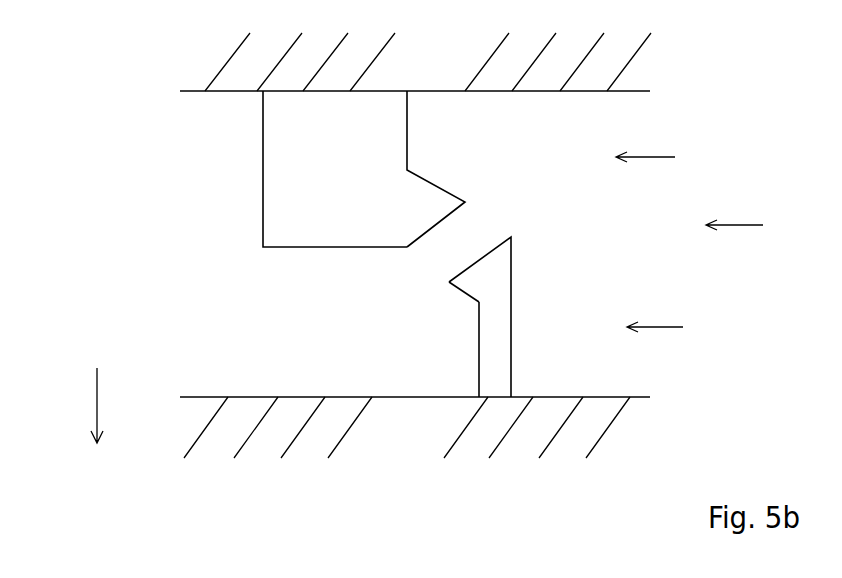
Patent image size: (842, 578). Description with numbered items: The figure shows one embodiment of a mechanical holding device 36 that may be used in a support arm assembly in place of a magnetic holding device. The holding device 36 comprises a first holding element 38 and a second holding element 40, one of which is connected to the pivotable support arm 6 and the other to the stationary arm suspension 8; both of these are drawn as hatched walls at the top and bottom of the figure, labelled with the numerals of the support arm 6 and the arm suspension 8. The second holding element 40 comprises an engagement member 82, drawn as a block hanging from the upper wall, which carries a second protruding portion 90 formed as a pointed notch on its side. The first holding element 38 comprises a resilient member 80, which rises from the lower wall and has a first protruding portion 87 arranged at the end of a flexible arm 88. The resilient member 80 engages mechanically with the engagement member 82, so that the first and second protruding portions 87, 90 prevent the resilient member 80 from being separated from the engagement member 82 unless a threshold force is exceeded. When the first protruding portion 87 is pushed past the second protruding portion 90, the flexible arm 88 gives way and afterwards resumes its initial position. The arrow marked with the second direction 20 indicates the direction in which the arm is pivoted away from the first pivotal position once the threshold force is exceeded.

The pivotable support arm 6 is at (415, 62).
The stationary arm suspension 8 is at (415, 427).
The engagement member 82 is at (333, 169).
The second protruding portion 90 is at (433, 210).
The resilient member 80 is at (480, 317).
The first protruding portion 87 is at (468, 284).
The flexible arm 88 is at (492, 367).
The second holding element 40 is at (662, 157).
The holding device 36 is at (753, 225).
The first holding element 38 is at (672, 327).
The second direction 20 is at (97, 402).